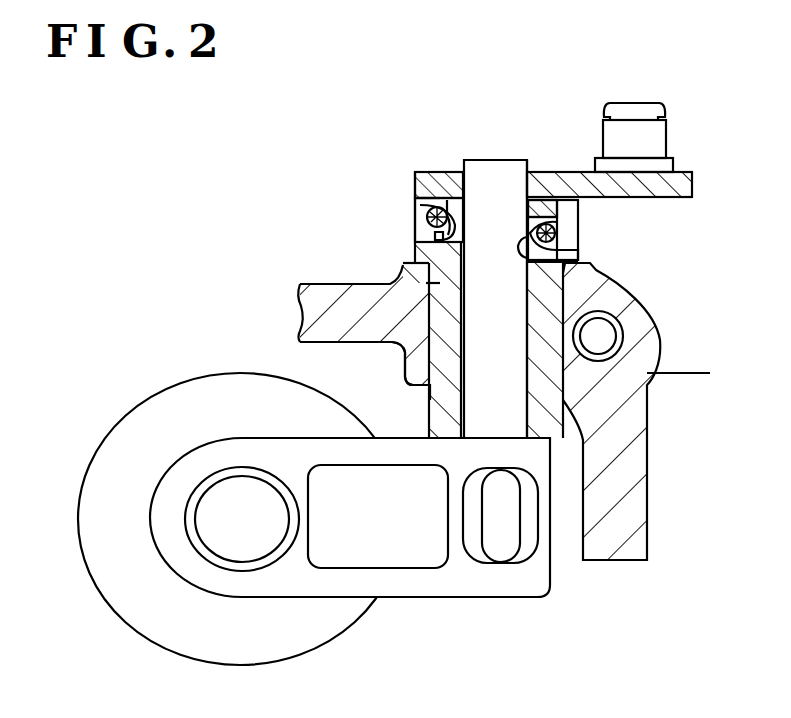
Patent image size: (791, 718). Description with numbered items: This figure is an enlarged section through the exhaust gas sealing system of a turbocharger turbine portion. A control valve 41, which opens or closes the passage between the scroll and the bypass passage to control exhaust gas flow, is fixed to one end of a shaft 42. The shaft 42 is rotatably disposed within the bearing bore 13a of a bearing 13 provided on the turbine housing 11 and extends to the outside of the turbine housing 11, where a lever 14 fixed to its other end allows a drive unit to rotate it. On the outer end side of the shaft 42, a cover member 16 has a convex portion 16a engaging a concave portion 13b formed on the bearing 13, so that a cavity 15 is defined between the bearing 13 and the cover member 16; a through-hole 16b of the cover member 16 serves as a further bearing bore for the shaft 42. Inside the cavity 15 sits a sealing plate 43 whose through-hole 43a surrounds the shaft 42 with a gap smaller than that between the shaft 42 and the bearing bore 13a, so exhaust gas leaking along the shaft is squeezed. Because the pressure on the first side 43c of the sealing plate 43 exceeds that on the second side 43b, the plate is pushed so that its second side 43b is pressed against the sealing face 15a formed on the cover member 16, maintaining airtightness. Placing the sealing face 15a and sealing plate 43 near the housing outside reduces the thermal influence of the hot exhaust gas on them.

The turbine housing 11 is at (622, 461).
The bearing 13 is at (402, 262).
The bearing bore 13a is at (450, 400).
The concave portion 13b is at (415, 213).
The lever 14 is at (568, 182).
The cavity 15 is at (437, 243).
The sealing face 15a is at (448, 196).
The cover member 16 is at (440, 202).
The convex portion 16a is at (415, 205).
The through-hole 16b is at (527, 243).
The control valve 41 is at (326, 626).
The shaft 42 is at (482, 164).
The sealing plate 43 is at (578, 237).
The through-hole 43a is at (597, 275).
The second side 43b is at (578, 217).
The first side 43c is at (578, 253).